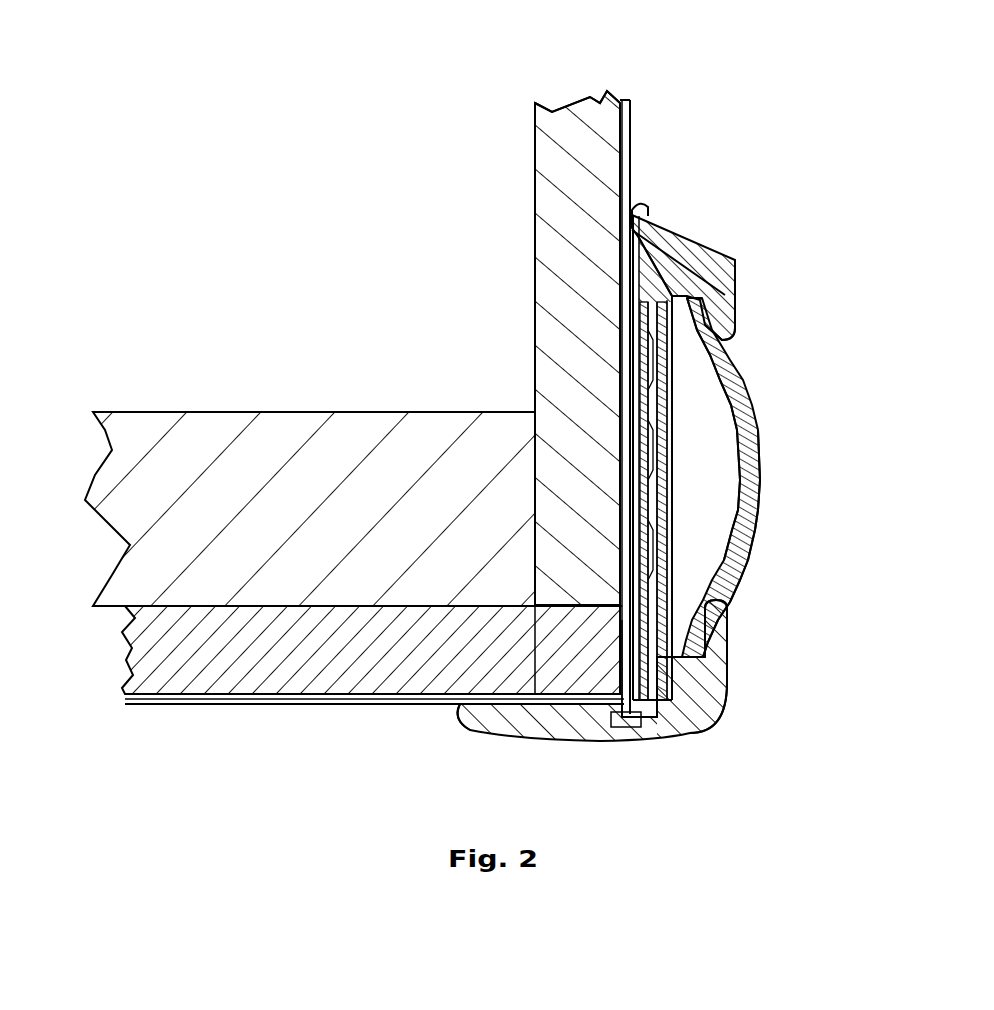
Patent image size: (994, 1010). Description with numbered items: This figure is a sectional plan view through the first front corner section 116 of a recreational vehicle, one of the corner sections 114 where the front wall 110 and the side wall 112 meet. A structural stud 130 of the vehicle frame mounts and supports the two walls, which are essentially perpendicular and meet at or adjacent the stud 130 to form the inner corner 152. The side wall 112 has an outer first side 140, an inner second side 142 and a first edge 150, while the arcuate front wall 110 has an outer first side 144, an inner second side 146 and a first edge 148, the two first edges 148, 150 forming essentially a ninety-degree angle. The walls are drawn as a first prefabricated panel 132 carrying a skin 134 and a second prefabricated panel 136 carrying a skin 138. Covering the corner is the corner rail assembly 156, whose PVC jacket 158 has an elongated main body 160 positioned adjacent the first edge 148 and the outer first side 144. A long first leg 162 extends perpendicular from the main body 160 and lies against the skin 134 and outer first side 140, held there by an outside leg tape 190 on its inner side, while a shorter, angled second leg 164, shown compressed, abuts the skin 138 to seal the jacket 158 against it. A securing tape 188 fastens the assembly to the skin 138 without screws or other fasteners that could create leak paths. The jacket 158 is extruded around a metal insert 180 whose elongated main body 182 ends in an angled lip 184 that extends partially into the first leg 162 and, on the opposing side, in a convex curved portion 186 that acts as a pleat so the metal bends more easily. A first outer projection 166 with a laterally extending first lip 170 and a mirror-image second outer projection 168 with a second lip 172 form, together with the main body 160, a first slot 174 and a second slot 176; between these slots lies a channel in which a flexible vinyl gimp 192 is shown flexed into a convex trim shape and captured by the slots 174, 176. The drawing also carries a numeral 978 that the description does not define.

The front wall 110 is at (683, 157).
The side wall 112 is at (148, 712).
The corner section 114 is at (458, 736).
The first front corner section 116 is at (757, 572).
The stud 130 is at (225, 410).
The first prefabricated panel 132 is at (128, 650).
The skin 134 is at (308, 705).
The second prefabricated panel 136 is at (578, 107).
The skin 138 is at (633, 184).
The outer first side 140 is at (225, 708).
The inner second side 142 is at (260, 603).
The outer first side 144 is at (634, 122).
The inner second side 146 is at (533, 218).
The first edge 148 is at (570, 608).
The first edge 150 is at (635, 660).
The inner corner 152 is at (617, 712).
The corner rail assembly 156 is at (764, 440).
The jacket 158 is at (668, 503).
The main body 160 is at (664, 382).
The first leg 162 is at (505, 722).
The second leg 164 is at (641, 216).
The first outer projection 166 is at (724, 262).
The second outer projection 168 is at (716, 683).
The first lip 170 is at (718, 320).
The second lip 172 is at (723, 628).
The first slot 174 is at (680, 318).
The second slot 176 is at (678, 637).
The metal insert 180 is at (638, 468).
The main body 182 is at (640, 513).
The lip 184 is at (634, 727).
The curved portion 186 is at (648, 422).
The securing tape 188 is at (633, 538).
The outside leg tape 190 is at (483, 702).
The gimp 192 is at (752, 524).
The band front surface 978 is at (682, 467).